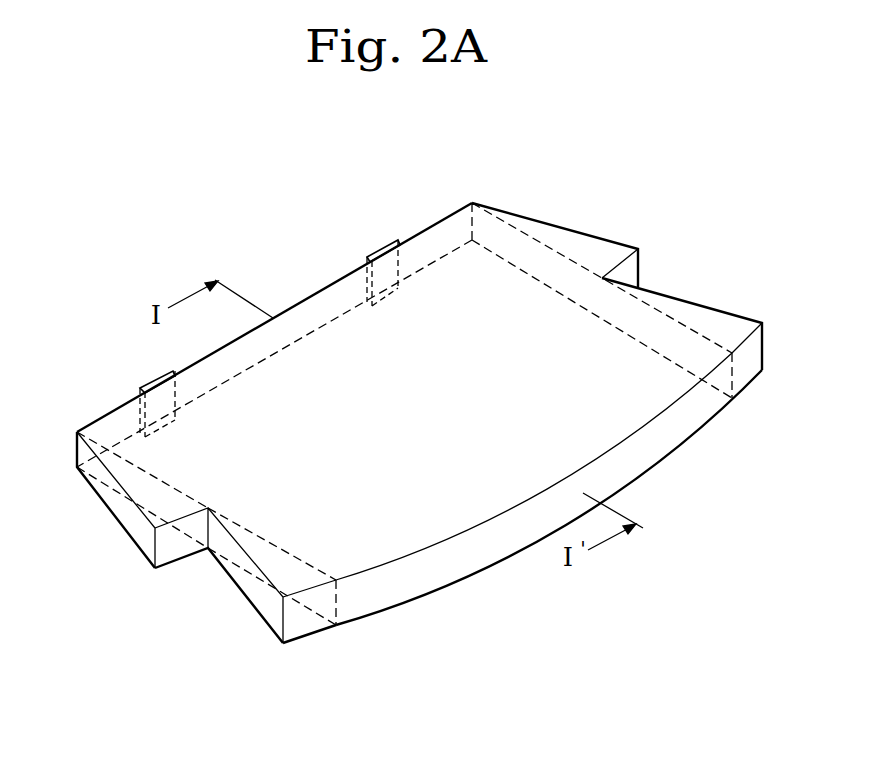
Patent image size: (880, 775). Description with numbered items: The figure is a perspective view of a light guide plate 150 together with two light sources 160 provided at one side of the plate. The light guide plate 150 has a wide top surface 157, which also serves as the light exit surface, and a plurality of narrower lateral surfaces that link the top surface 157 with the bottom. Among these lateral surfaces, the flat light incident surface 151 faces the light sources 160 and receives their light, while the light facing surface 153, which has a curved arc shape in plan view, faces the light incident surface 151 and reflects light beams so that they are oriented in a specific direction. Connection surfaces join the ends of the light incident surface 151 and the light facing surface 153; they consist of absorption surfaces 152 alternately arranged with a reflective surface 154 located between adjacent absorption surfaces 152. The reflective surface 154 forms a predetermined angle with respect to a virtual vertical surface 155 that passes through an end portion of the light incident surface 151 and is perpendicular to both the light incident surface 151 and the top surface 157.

The light guide plate 150 is at (404, 421).
The light incident surface 151 is at (318, 301).
The absorption surface 152 is at (142, 535).
The light facing surface 153 is at (467, 558).
The reflective surface 154 is at (185, 553).
The vertical surface 155 is at (322, 600).
The top surface 157 is at (507, 278).
The light source 160 is at (381, 250).